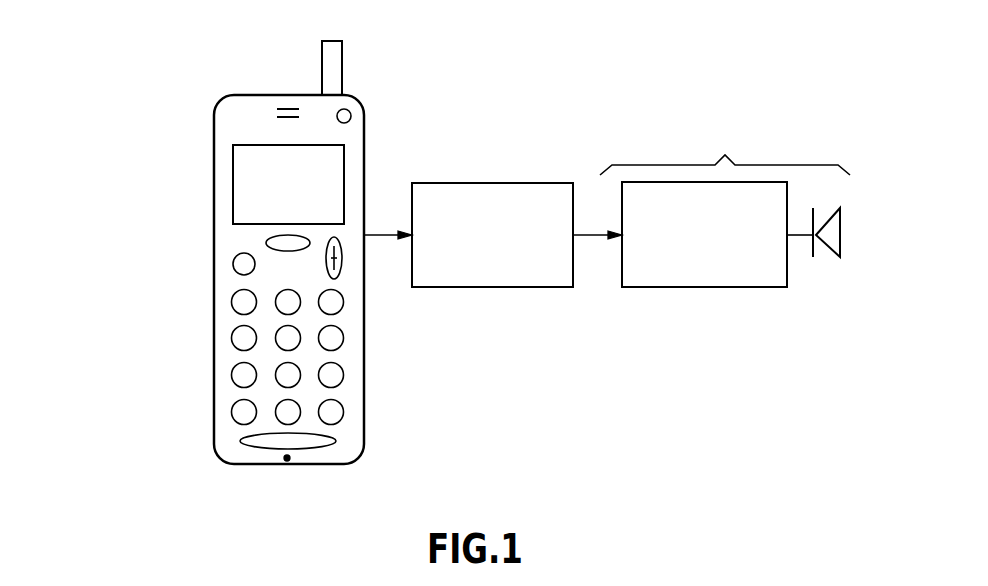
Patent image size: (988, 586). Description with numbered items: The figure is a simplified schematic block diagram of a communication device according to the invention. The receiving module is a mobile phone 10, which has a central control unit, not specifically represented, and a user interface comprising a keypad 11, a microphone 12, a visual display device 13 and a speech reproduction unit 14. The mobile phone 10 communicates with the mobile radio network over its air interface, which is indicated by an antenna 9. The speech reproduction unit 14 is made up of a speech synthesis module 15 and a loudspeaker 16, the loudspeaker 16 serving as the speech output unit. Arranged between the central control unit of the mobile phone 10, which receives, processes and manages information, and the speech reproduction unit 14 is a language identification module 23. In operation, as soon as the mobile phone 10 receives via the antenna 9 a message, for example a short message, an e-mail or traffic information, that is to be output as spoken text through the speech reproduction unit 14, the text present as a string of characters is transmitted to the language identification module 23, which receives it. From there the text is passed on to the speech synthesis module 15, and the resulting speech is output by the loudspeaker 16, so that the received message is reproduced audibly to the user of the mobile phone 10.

The antenna 9 is at (342, 58).
The mobile phone 10 is at (214, 372).
The keypad 11 is at (318, 394).
The microphone 12 is at (288, 465).
The visual display device 13 is at (246, 184).
The speech reproduction unit 14 is at (718, 150).
The speech synthesis module 15 is at (658, 287).
The loudspeaker 16 is at (840, 233).
The language identification module 23 is at (463, 183).